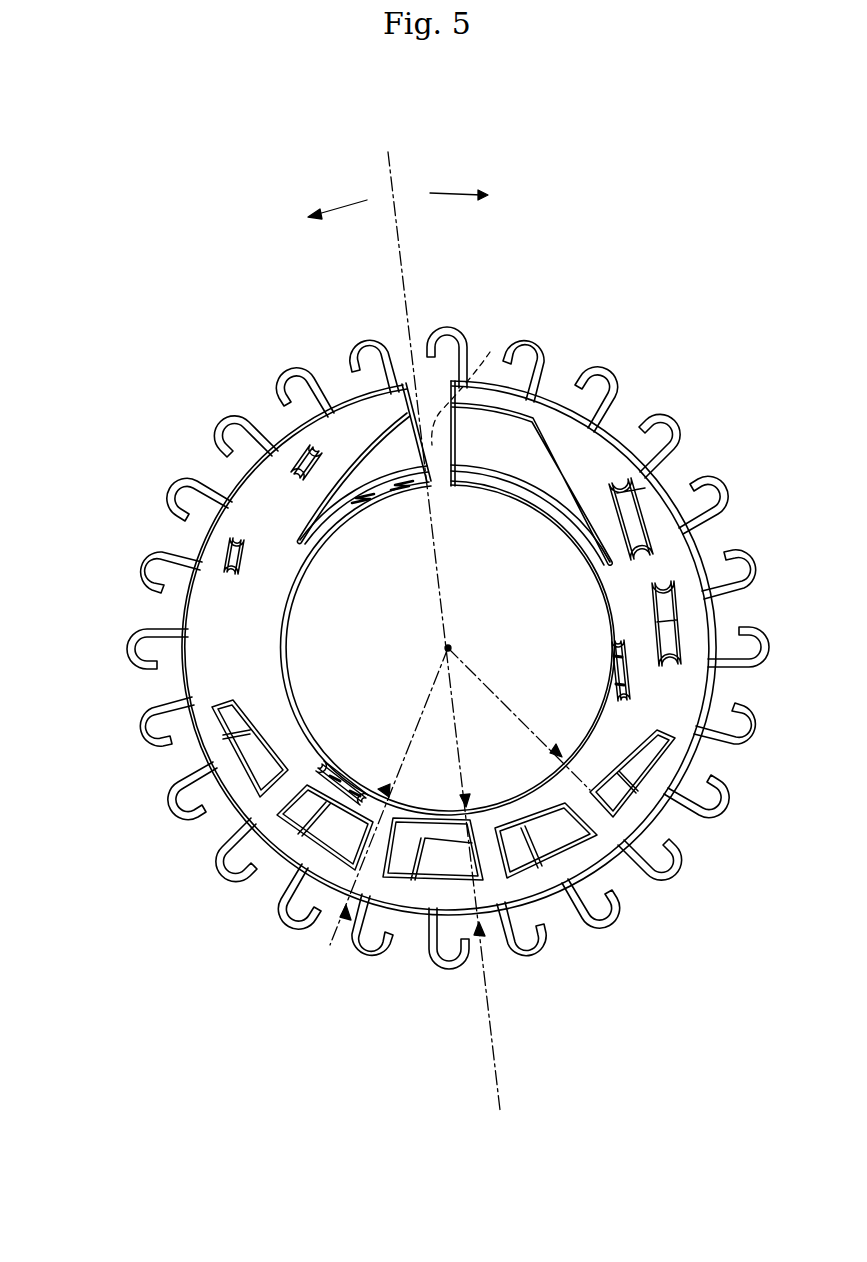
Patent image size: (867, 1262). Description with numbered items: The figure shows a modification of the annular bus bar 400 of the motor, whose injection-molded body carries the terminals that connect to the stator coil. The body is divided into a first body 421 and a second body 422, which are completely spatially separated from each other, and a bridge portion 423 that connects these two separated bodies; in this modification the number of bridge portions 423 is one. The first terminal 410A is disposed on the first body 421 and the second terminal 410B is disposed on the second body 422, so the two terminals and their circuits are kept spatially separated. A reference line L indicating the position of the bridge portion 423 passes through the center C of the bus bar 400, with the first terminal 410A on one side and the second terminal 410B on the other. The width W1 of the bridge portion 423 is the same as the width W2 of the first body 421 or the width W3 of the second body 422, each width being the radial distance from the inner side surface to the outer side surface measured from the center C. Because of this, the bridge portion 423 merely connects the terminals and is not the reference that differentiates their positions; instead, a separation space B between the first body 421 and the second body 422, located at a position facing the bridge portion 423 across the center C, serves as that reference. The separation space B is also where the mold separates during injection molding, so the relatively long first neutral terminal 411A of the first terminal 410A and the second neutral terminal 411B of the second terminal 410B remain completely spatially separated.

The bus bar 400 is at (92, 142).
The first terminal 410A is at (297, 348).
The second terminal 410B is at (527, 324).
The first neutral terminal 411A is at (380, 348).
The second neutral terminal 411B is at (441, 330).
The first body 421 is at (283, 430).
The second body 422 is at (560, 392).
The bridge portion 423 is at (490, 928).
The separation space B is at (466, 385).
The center C is at (448, 648).
The reference line L is at (404, 619).
The width of the bridge portion W1 is at (477, 895).
The width of the first body W2 is at (422, 718).
The width of the second body W3 is at (510, 717).